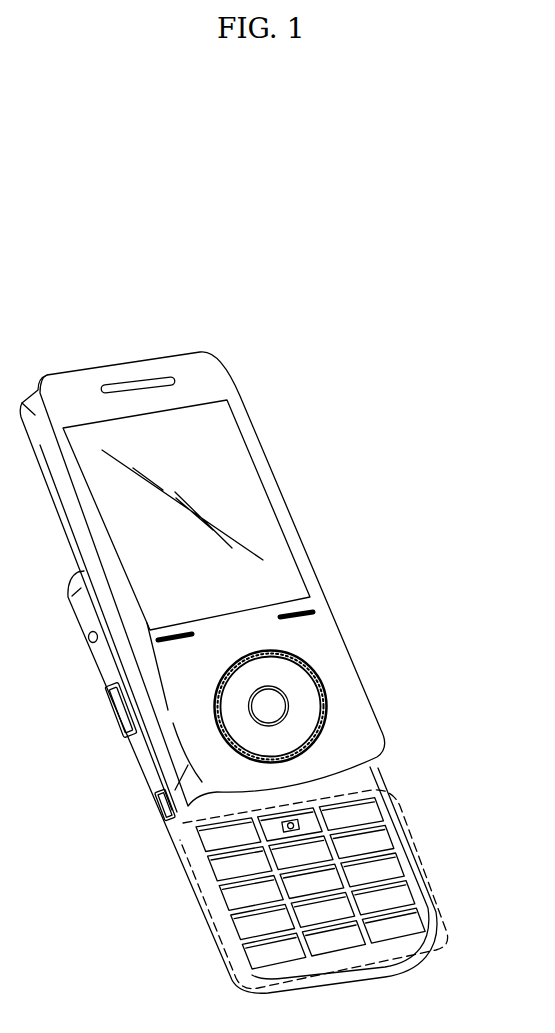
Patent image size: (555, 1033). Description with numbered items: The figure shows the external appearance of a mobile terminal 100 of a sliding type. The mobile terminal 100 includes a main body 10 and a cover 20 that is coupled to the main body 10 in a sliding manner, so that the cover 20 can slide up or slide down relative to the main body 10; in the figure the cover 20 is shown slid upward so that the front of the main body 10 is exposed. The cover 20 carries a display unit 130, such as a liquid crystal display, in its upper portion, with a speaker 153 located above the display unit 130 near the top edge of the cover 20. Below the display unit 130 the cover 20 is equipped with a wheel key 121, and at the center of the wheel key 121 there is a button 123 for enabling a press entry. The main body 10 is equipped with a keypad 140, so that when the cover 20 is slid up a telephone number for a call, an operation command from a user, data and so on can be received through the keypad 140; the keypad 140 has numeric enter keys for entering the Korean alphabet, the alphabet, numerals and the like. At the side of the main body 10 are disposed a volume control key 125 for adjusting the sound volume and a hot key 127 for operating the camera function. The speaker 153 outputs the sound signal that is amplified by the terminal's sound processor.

The mobile terminal 100 is at (360, 309).
The main body 10 is at (418, 877).
The cover 20 is at (327, 602).
The display unit 130 is at (266, 459).
The speaker 153 is at (137, 383).
The wheel key 121 is at (282, 690).
The button 123 is at (326, 696).
The volume control key 125 is at (111, 704).
The hot key 127 is at (158, 816).
The keypad 140 is at (402, 807).